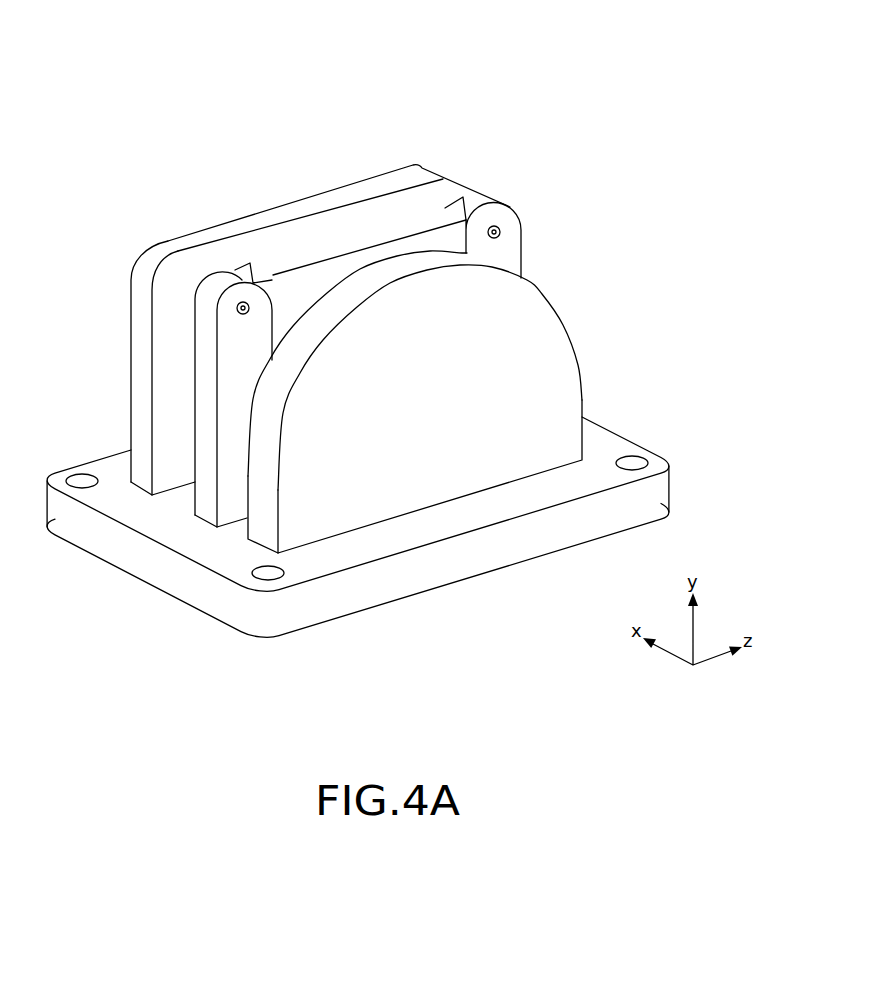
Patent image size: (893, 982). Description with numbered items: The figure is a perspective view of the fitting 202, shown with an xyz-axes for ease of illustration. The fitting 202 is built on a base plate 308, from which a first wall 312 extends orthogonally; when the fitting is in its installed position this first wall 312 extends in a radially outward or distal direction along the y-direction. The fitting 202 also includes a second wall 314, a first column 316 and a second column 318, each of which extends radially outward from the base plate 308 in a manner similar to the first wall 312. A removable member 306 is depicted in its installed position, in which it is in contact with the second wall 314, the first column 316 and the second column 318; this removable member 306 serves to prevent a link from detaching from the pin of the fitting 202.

The fitting 202 is at (360, 78).
The removable member 306 is at (322, 225).
The base plate 308 is at (148, 558).
The first wall 312 is at (565, 327).
The second wall 314 is at (140, 378).
The first column 316 is at (203, 307).
The second column 318 is at (520, 233).